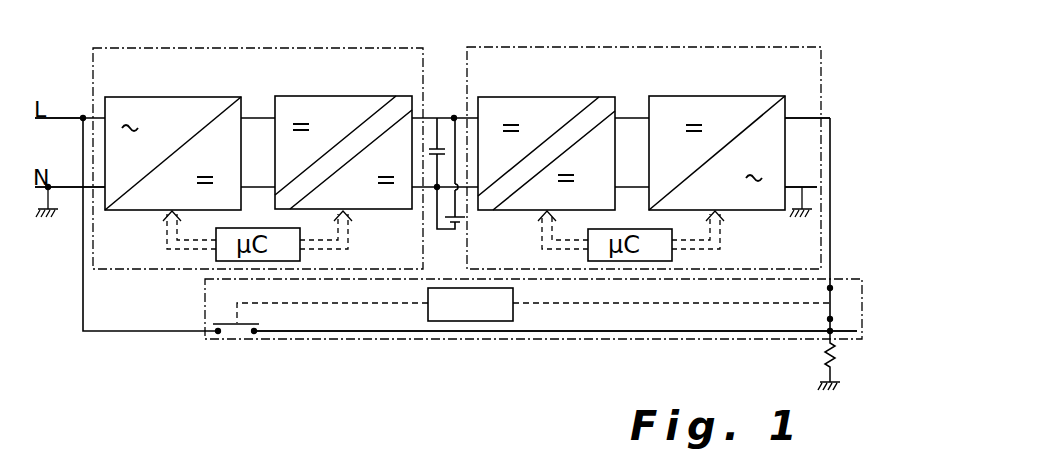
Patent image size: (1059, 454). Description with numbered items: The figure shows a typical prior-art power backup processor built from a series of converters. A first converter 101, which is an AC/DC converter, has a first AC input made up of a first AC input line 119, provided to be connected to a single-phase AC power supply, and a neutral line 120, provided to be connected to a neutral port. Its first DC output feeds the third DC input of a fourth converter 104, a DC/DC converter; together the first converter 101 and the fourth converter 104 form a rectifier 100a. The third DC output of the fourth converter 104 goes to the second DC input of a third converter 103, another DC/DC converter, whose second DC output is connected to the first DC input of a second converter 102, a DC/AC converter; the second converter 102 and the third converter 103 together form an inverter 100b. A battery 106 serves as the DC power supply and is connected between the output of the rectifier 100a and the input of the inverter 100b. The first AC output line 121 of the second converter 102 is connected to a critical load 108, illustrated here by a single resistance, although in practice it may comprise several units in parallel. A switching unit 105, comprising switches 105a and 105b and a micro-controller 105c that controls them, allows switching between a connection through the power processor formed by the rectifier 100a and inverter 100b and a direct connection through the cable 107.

The rectifier 100a is at (280, 45).
The inverter 100b is at (702, 45).
The first converter 101 is at (173, 97).
The second converter 102 is at (717, 97).
The third converter 103 is at (547, 97).
The fourth converter 104 is at (342, 97).
The switching unit 105 is at (603, 338).
The switch 105a is at (827, 311).
The switch 105b is at (237, 325).
The micro-controller 105c is at (475, 321).
The battery 106 is at (455, 224).
The cable 107 is at (535, 332).
The critical load 108 is at (828, 348).
The first AC input line 119 is at (55, 118).
The neutral line 120 is at (68, 187).
The first AC output line 121 is at (799, 118).